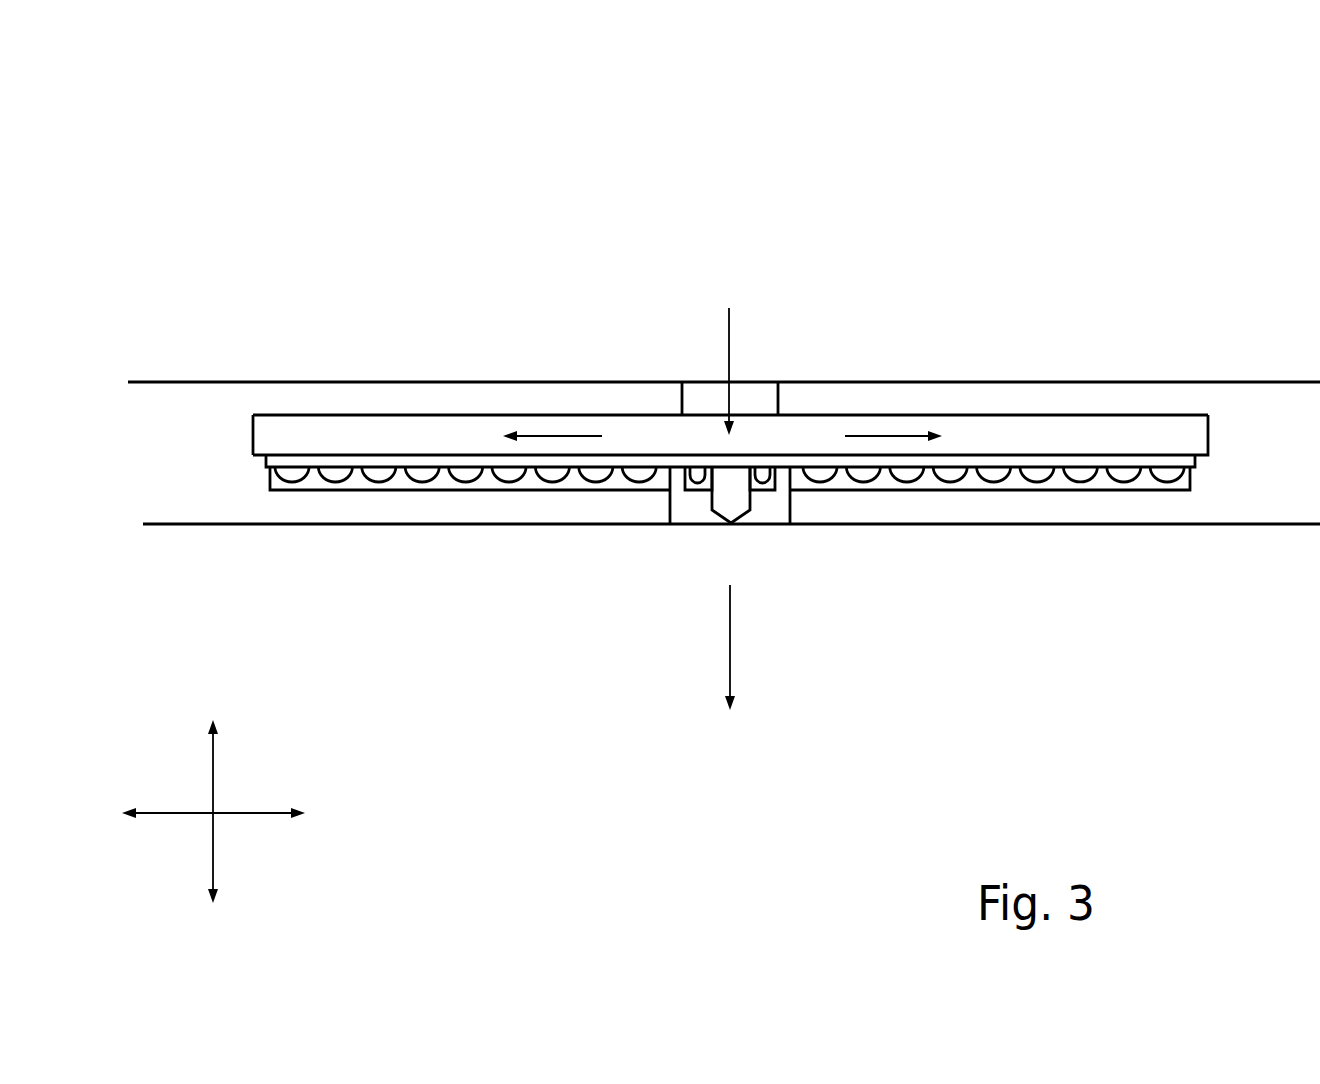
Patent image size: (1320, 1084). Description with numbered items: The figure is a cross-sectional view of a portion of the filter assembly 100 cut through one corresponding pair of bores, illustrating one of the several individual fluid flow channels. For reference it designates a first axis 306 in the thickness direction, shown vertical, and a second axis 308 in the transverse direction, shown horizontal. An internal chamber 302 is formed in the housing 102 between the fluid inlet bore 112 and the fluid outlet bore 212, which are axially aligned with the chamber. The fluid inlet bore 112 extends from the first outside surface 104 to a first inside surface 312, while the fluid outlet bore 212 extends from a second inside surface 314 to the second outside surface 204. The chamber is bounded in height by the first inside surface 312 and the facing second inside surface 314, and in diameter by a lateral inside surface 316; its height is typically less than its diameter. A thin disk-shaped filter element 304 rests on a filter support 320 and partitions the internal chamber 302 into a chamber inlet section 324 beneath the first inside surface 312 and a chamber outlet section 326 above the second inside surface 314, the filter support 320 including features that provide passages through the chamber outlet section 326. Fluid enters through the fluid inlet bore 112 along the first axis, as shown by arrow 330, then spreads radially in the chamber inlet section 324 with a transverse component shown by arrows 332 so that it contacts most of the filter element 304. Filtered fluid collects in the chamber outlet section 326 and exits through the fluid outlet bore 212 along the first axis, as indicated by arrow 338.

The filter assembly 100 is at (224, 172).
The housing 102 is at (158, 338).
The first outside surface 104 is at (1238, 382).
The fluid inlet bore 112 is at (777, 395).
The second outside surface 204 is at (1215, 526).
The fluid outlet bore 212 is at (788, 508).
The internal chamber 302 is at (320, 415).
The filter element 304 is at (998, 457).
The first axis 306 is at (213, 773).
The second axis 308 is at (265, 813).
The first inside surface 312 is at (1090, 415).
The second inside surface 314 is at (1093, 492).
The lateral inside surface 316 is at (253, 437).
The filter support 320 is at (312, 486).
The chamber inlet section 324 is at (414, 420).
The chamber outlet section 326 is at (502, 495).
The arrow 330 is at (727, 355).
The arrows 332 is at (577, 436).
The arrow 338 is at (730, 652).